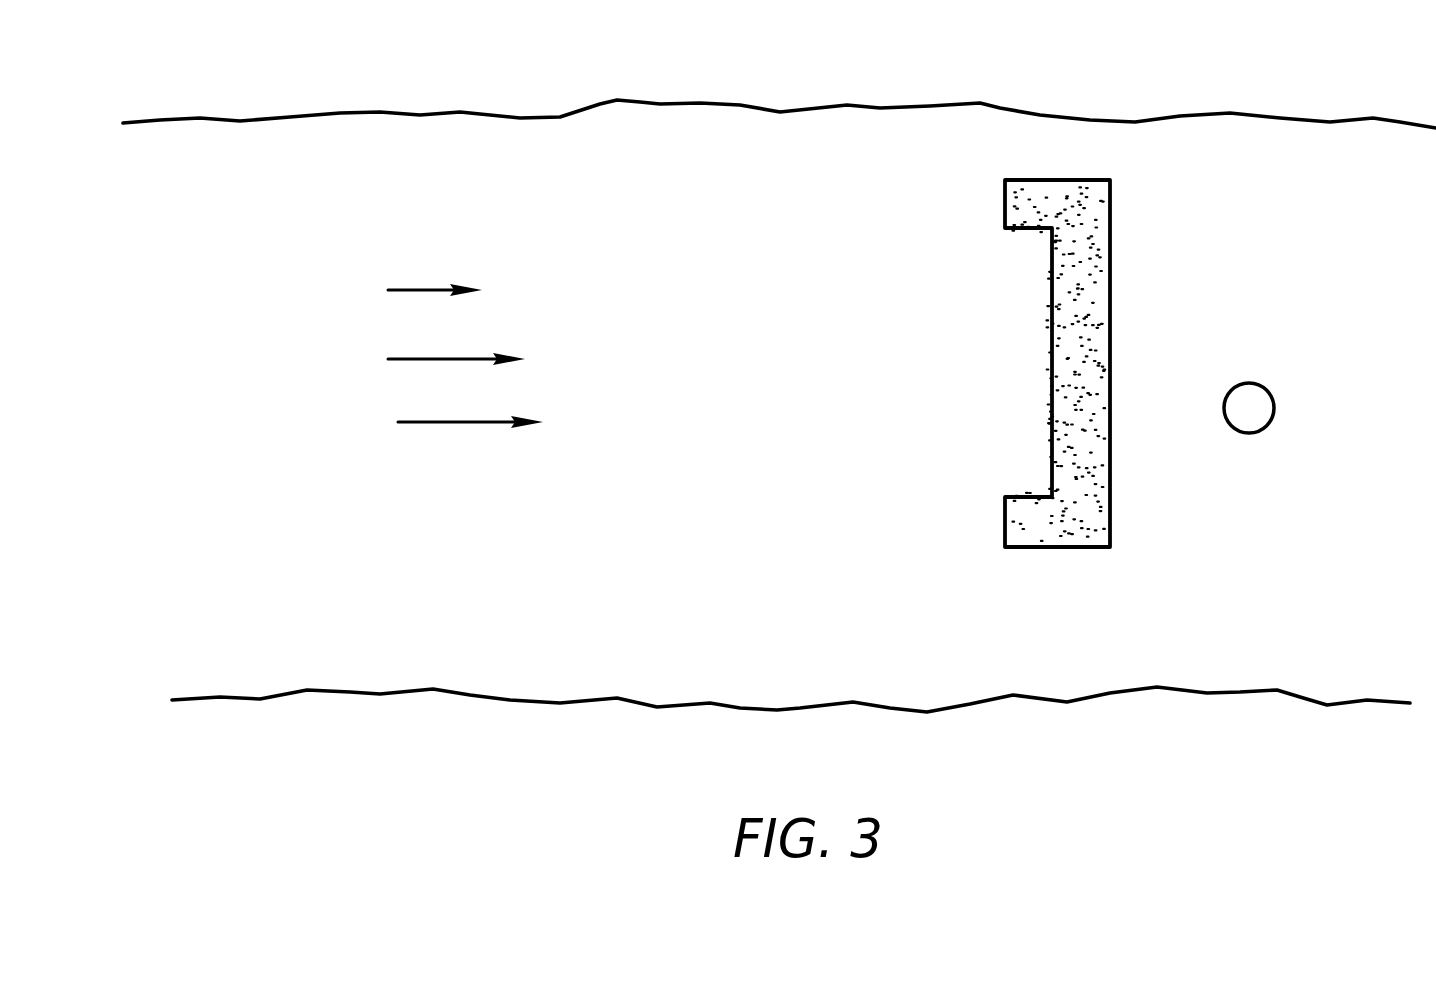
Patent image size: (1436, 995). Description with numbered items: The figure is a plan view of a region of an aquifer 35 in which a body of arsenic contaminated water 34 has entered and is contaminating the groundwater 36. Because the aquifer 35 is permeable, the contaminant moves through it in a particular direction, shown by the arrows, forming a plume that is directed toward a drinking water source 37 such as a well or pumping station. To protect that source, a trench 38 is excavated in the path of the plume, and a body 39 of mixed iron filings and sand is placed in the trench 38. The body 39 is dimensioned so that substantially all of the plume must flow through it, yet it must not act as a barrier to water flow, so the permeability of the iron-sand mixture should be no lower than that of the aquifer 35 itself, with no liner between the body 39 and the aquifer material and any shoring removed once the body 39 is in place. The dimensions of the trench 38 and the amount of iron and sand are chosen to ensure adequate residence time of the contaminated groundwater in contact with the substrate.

The body of arsenic contaminated water 34 is at (418, 334).
The aquifer 35 is at (690, 510).
The groundwater 36 is at (634, 116).
The drinking water source 37 is at (1266, 427).
The trench 38 is at (1088, 547).
The body of mixed iron filings and sand 39 is at (1097, 297).